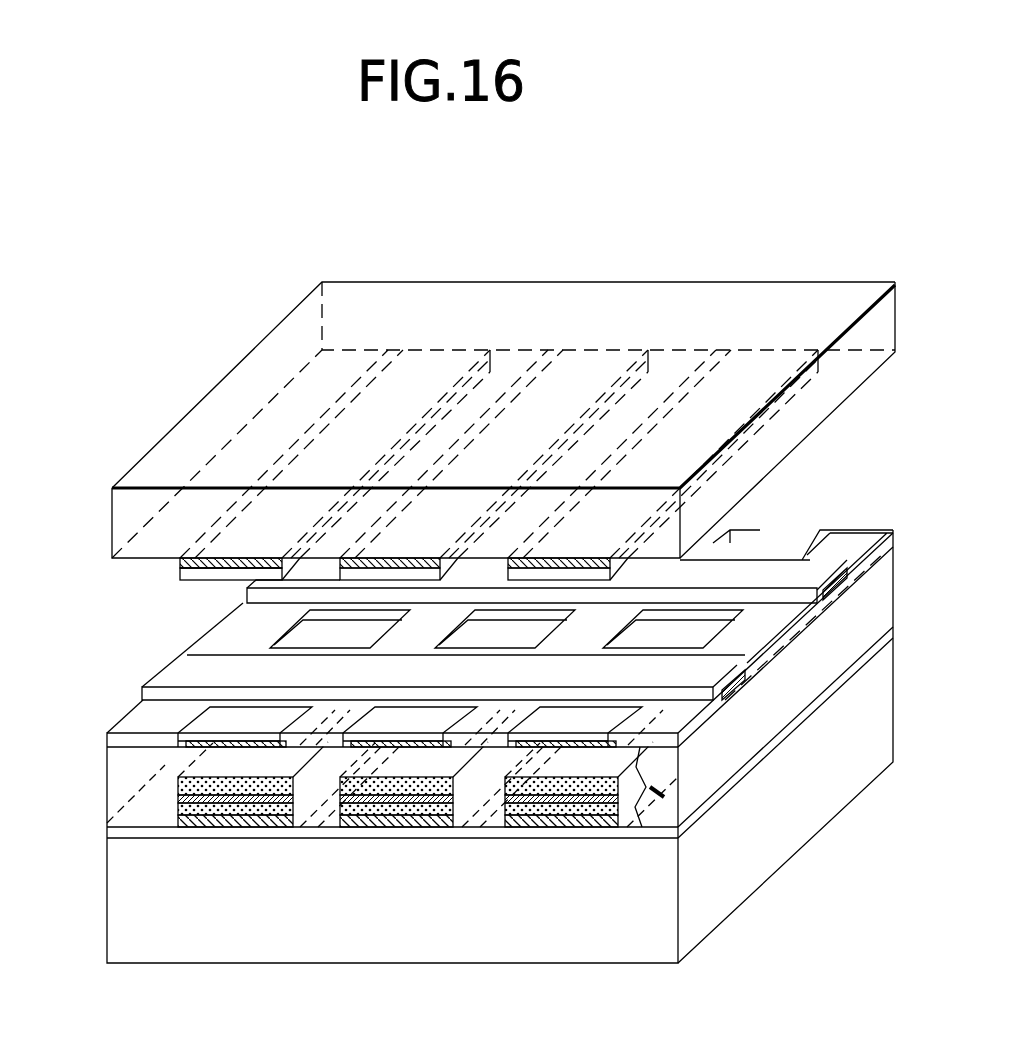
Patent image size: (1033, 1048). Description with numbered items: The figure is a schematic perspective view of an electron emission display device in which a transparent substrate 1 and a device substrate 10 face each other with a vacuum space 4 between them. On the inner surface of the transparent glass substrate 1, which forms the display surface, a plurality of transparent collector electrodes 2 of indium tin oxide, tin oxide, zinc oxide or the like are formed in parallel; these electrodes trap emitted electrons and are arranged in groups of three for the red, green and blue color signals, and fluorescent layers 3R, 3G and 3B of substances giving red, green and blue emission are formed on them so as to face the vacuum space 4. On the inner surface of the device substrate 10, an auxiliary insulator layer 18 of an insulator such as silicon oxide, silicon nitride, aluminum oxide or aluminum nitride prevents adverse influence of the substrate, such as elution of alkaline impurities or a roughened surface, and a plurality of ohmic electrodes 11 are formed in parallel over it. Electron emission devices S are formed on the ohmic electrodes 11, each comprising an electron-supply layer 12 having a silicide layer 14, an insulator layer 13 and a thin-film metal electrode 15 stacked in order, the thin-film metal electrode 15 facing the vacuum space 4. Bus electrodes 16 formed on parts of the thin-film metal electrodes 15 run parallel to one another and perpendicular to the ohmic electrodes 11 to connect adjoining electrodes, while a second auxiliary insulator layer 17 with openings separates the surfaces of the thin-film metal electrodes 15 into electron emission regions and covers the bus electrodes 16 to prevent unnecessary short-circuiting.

The transparent substrate 1 is at (288, 330).
The transparent collector electrodes 2 is at (178, 562).
The fluorescent layer 3R is at (232, 573).
The fluorescent layer 3G is at (412, 570).
The fluorescent layer 3B is at (578, 577).
The vacuum space 4 is at (874, 484).
The device substrate 10 is at (113, 923).
The ohmic electrodes 11 is at (205, 822).
The electron-supply layer 12 is at (300, 792).
The insulator layer 13 is at (107, 768).
The silicide layer 14 is at (590, 807).
The thin-film metal electrode 15 is at (230, 722).
The bus electrodes 16 is at (733, 690).
The second auxiliary insulator layer 17 is at (108, 733).
The auxiliary insulator layer 18 is at (107, 832).
The electron emission devices S is at (650, 787).